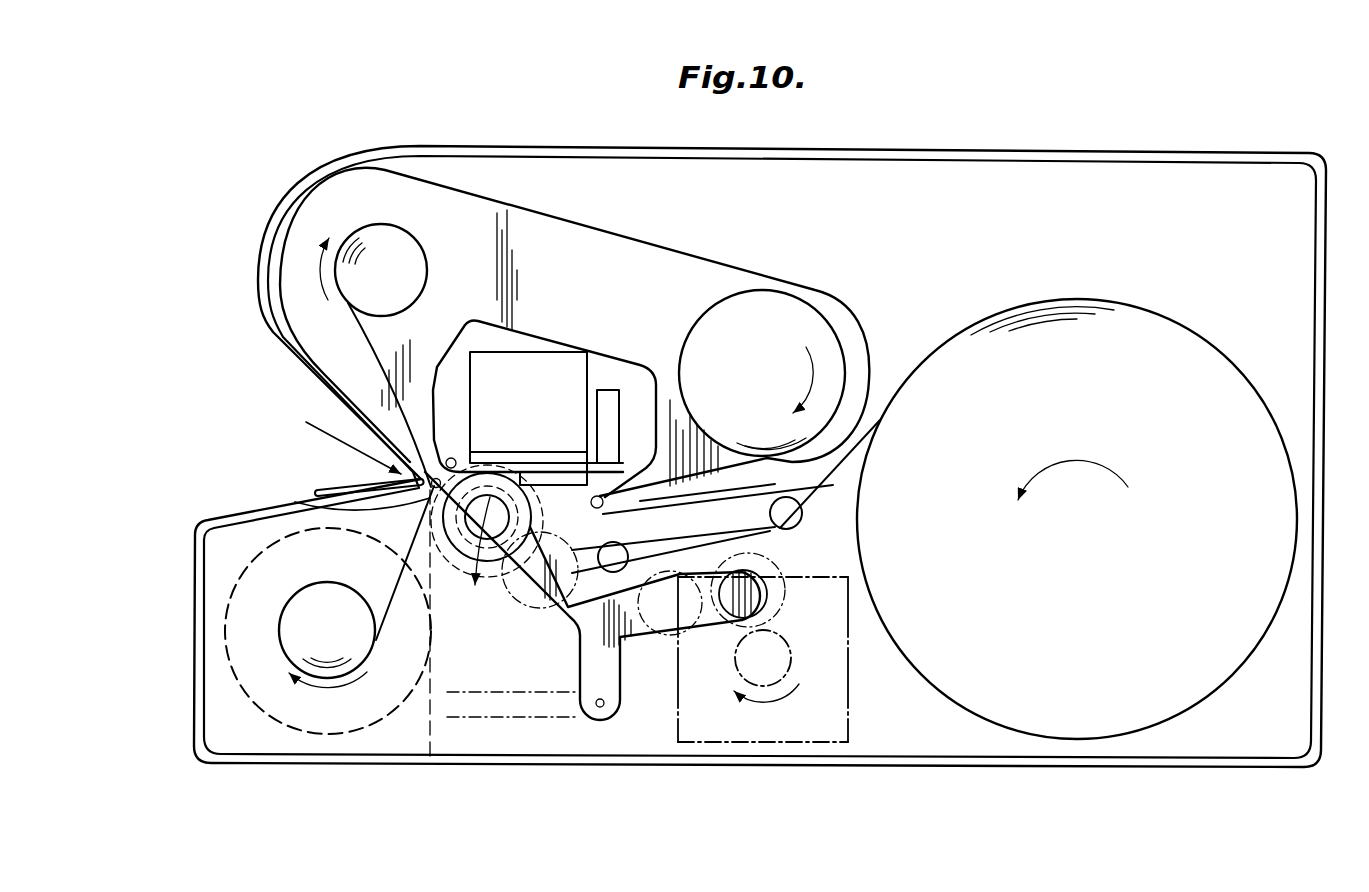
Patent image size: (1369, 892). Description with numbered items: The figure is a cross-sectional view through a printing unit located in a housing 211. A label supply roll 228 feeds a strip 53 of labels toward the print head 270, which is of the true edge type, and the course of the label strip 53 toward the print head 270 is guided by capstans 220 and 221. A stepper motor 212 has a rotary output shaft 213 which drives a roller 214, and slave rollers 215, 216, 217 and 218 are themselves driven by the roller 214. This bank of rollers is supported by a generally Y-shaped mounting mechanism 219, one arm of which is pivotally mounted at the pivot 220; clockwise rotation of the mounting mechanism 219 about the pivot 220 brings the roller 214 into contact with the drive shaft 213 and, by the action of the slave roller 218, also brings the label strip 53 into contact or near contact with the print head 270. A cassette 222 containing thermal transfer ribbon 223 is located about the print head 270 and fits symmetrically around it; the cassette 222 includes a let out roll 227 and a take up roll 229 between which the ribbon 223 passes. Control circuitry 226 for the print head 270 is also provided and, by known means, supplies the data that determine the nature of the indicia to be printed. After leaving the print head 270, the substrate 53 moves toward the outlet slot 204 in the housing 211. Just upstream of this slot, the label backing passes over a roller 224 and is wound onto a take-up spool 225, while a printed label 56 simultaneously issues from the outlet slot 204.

The housing 211 is at (957, 152).
The cassette 222 is at (744, 260).
The take up roll 229 is at (415, 258).
The roller 224 is at (427, 385).
The print head 270 is at (517, 458).
The control circuitry 226 is at (607, 392).
The let out roll 227 is at (697, 318).
The thermal transfer ribbon 223 is at (723, 455).
The label supply roll 228 is at (1185, 350).
The outlet slot 204 is at (340, 440).
The printed label 56 is at (352, 484).
The slave roller 218 is at (307, 505).
The strip of labels 53 is at (837, 493).
The pivot 220 is at (773, 520).
The capstan 221 is at (628, 558).
The Y-shaped mounting mechanism 219 is at (566, 630).
The slave roller 215 is at (671, 636).
The slave roller 217 is at (522, 601).
The slave roller 216 is at (555, 633).
The roller 214 is at (800, 583).
The rotary output shaft 213 is at (800, 640).
The stepper motor 212 is at (815, 705).
The take-up spool 225 is at (277, 626).